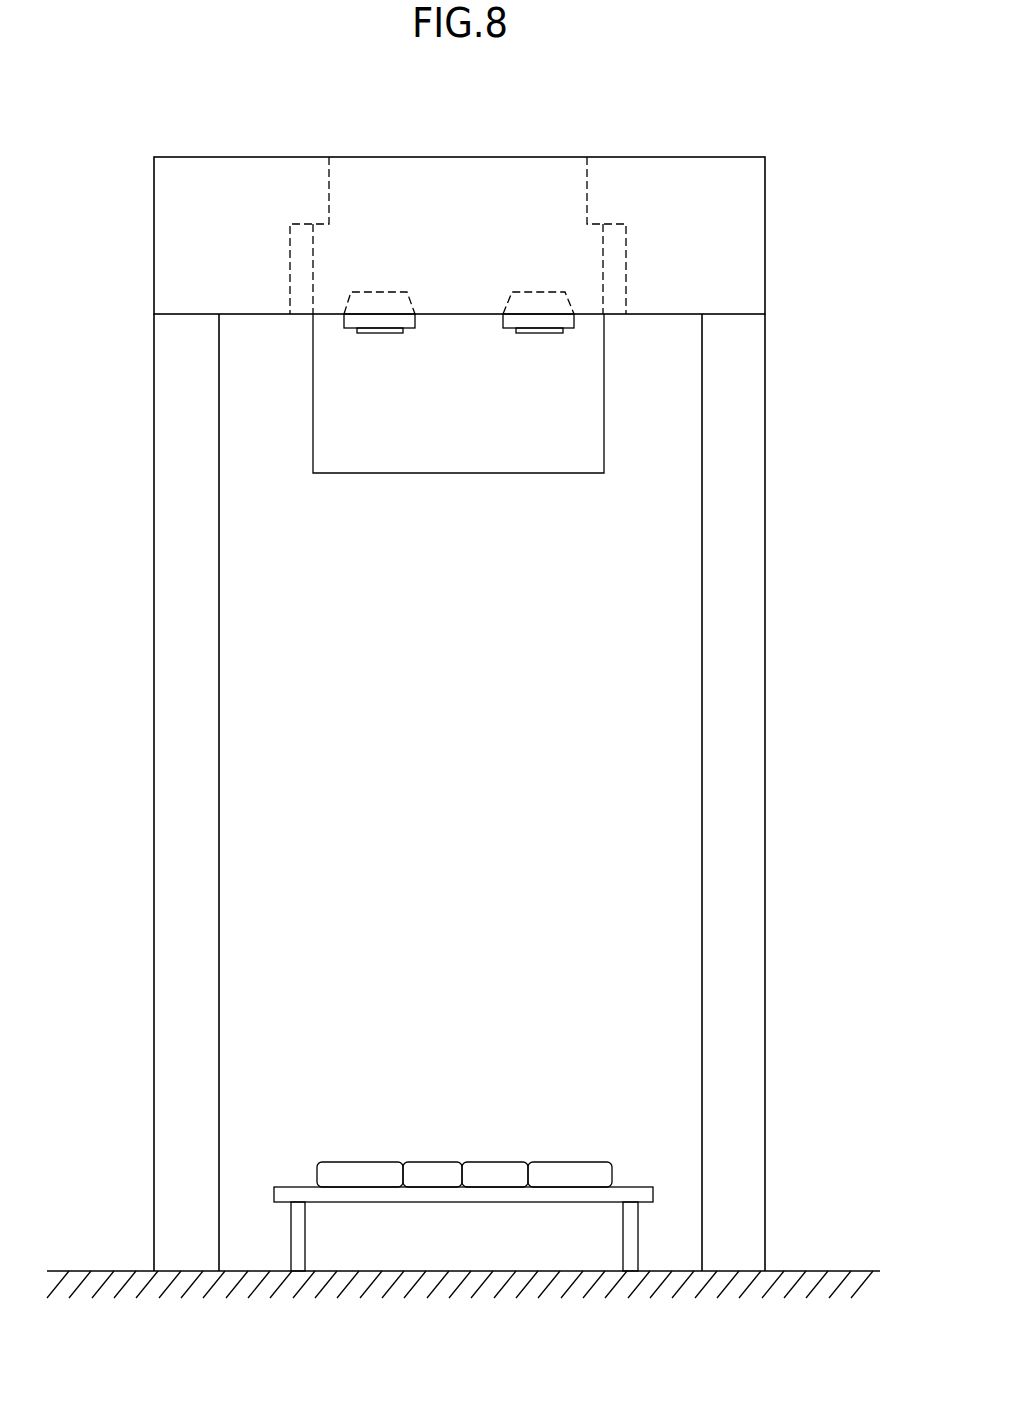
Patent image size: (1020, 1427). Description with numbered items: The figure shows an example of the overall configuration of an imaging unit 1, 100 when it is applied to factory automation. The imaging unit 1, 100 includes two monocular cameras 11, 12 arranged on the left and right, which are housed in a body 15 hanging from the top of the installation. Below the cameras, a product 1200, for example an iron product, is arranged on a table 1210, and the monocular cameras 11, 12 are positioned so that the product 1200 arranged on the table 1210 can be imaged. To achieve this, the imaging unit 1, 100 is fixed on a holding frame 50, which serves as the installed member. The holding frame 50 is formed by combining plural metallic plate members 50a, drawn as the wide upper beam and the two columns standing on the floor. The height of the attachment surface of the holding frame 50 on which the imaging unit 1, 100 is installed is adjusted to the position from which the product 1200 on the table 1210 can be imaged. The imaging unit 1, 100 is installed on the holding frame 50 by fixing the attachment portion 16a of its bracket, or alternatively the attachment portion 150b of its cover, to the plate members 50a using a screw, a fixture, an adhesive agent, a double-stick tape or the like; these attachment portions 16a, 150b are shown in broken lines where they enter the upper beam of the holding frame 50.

The holding frame 50 is at (461, 683).
The metallic plate member 50a is at (221, 169).
The attachment portion 16a is at (459, 235).
The attachment portion 150b is at (303, 270).
The imaging unit 1 is at (460, 414).
The imaging unit 100 is at (460, 414).
The housing 15 is at (364, 449).
The monocular camera 11 is at (353, 323).
The monocular camera 12 is at (566, 322).
The table 1210 is at (293, 1193).
The product 1200 is at (610, 1152).